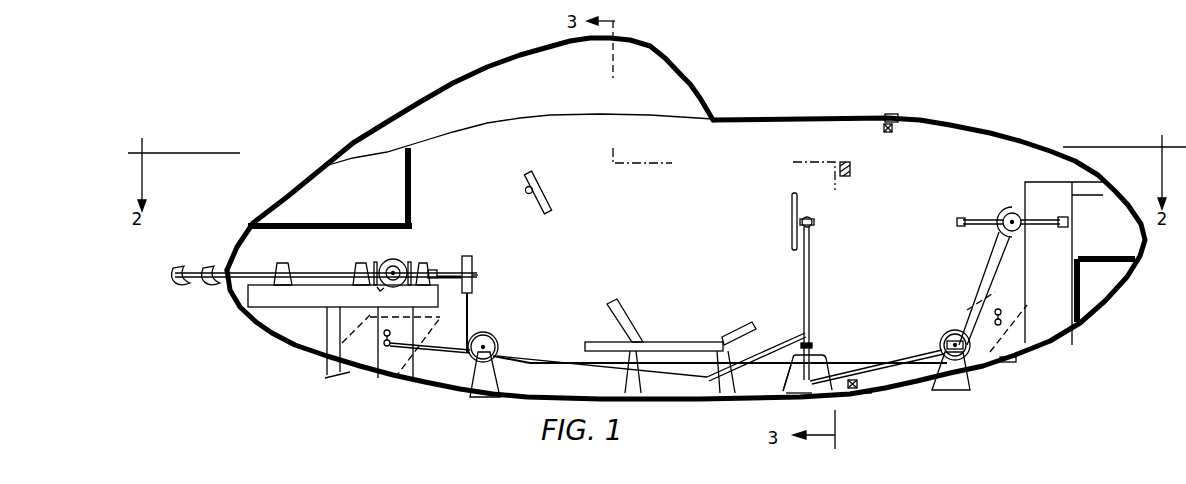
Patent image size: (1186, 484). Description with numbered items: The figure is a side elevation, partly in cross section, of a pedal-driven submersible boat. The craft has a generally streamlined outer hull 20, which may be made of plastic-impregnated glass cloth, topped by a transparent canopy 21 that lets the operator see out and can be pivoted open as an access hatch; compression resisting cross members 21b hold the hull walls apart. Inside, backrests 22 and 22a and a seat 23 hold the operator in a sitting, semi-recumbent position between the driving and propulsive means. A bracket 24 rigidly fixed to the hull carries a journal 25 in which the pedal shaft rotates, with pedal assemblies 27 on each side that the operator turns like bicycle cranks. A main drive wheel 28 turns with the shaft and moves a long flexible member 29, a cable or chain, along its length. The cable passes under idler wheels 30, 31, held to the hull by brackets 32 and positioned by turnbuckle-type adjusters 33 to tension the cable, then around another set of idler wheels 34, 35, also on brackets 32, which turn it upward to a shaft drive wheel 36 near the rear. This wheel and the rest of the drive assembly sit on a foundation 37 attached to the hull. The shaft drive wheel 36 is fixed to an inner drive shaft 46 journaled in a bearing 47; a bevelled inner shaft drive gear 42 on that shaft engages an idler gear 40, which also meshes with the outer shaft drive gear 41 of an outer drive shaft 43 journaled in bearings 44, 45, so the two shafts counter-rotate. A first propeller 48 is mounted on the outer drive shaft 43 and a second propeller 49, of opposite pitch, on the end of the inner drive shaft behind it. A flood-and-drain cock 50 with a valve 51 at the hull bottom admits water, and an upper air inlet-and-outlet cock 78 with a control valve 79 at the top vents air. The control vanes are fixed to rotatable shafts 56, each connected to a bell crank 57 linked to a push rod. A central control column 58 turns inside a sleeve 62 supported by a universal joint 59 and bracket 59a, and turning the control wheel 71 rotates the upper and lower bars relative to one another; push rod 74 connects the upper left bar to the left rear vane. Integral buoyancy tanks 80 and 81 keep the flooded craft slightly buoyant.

The outer hull 20 is at (808, 117).
The transparent canopy 21 is at (692, 82).
The compression resisting cross members 21b is at (851, 173).
The backrest 22 is at (538, 188).
The backrest 22a is at (525, 187).
The seat 23 is at (650, 343).
The bracket 24 is at (1037, 264).
The journal 25 is at (1018, 209).
The pedal assemblies 27 is at (960, 220).
The main drive wheel 28 is at (1003, 216).
The long flexible member 29 is at (469, 307).
The idler wheel 30 is at (938, 333).
The idler wheel 31 is at (962, 337).
The brackets 32 is at (495, 368).
The turnbuckle-type adjusters 33 is at (1010, 364).
The idler wheel 34 is at (514, 339).
The idler wheel 35 is at (496, 339).
The shaft drive wheel 36 is at (474, 258).
The foundation 37 is at (297, 307).
The idler gear 40 is at (396, 262).
The outer shaft drive gear 41 is at (369, 297).
The inner shaft drive gear 42 is at (426, 262).
The outer drive shaft 43 is at (336, 271).
The bearing 44 is at (365, 263).
The bearing 45 is at (282, 263).
The inner drive shaft 46 is at (441, 288).
The bearing 47 is at (435, 268).
The first propeller 48 is at (215, 268).
The second propeller 49 is at (180, 268).
The flood-and-drain cock 50 is at (853, 390).
The valve 51 is at (868, 395).
The rotatable shafts 56 is at (383, 343).
The bell crank 57 is at (390, 334).
The central control column 58 is at (826, 372).
The universal joint 59 is at (791, 372).
The bracket 59a is at (813, 394).
The sleeve 62 is at (814, 328).
The control wheel 71 is at (797, 202).
The push rod 74 is at (762, 353).
The upper air inlet-and-outlet cock 78 is at (889, 114).
The control valve 79 is at (893, 133).
The buoyancy tank 80 is at (341, 205).
The buoyancy tank 81 is at (1091, 286).